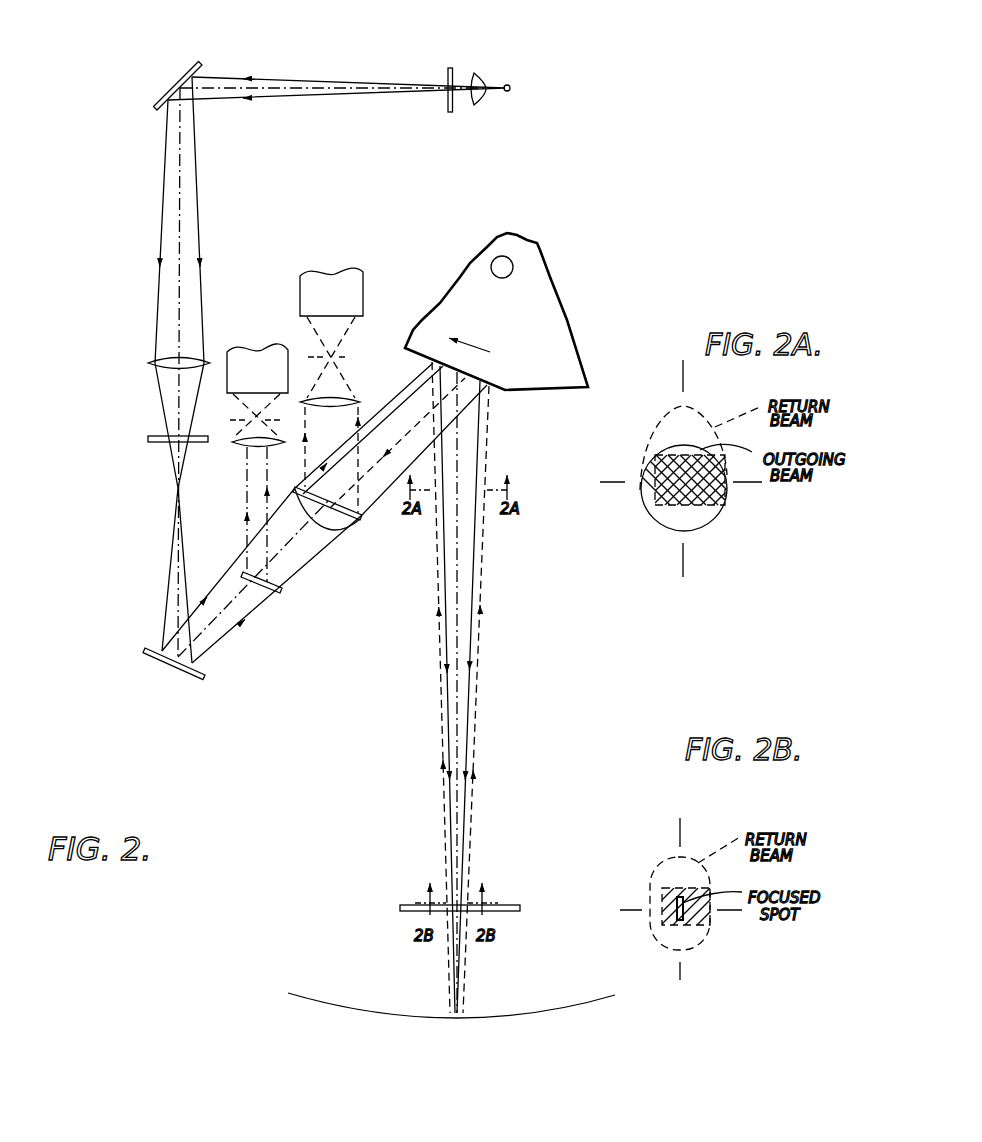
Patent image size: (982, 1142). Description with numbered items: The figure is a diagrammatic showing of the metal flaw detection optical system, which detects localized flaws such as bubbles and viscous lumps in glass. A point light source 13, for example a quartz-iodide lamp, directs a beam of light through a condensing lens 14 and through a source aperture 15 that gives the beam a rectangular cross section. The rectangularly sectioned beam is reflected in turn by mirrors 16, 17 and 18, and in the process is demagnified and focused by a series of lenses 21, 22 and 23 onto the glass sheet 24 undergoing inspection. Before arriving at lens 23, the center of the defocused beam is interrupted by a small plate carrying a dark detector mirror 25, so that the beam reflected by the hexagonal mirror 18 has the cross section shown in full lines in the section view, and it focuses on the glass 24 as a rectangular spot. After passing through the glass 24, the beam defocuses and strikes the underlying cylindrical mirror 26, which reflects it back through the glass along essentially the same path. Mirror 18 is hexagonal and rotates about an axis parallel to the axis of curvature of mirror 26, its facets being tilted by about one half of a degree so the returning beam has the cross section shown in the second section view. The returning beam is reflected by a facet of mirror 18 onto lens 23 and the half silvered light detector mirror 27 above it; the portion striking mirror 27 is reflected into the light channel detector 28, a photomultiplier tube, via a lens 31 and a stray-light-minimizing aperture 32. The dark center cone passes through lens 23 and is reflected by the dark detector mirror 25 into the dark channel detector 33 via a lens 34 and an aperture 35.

The point light source 13 is at (511, 86).
The condensing lens 14 is at (480, 103).
The source aperture 15 is at (452, 68).
The mirror 16 is at (201, 62).
The mirror 17 is at (193, 677).
The hexagonal mirror 18 is at (552, 325).
The lens 21 is at (148, 363).
The lens 22 is at (148, 440).
The lens 23 is at (328, 538).
The glass sheet 24 is at (513, 905).
The dark detector mirror 25 is at (283, 585).
The cylindrical mirror 26 is at (478, 1018).
The half silvered light detector mirror 27 is at (346, 500).
The light channel detector 28 is at (323, 285).
The lens 31 is at (362, 398).
The aperture 32 is at (350, 356).
The dark channel detector 33 is at (238, 352).
The lens 34 is at (234, 447).
The aperture 35 is at (232, 420).